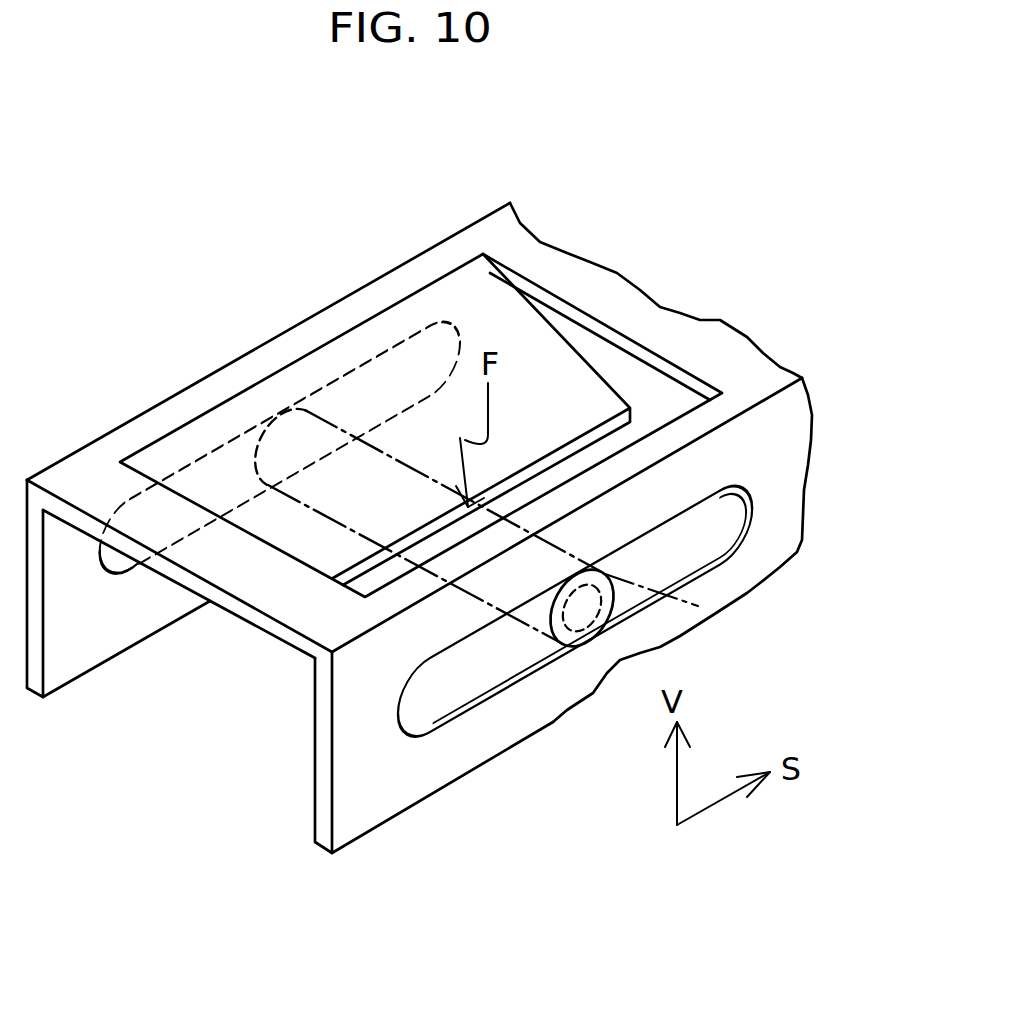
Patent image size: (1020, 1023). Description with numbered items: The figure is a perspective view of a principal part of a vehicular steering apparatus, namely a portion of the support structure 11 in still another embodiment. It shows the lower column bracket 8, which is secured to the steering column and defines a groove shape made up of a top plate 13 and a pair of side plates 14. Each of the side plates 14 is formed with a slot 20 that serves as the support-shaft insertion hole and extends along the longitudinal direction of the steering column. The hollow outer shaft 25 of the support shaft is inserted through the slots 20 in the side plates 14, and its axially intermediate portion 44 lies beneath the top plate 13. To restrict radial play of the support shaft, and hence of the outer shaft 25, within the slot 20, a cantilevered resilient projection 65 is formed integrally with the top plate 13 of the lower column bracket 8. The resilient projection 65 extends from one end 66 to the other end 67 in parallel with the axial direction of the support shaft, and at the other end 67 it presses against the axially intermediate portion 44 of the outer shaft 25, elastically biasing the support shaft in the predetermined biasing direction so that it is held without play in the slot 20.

The lower column bracket 8 is at (467, 541).
The support structure 11 is at (622, 207).
The top plate 13 is at (697, 345).
The side plates 14 is at (92, 650).
The slot 20 is at (222, 463).
The outer shaft 25 is at (698, 606).
The axially intermediate portion 44 is at (523, 528).
The resilient projection 65 is at (571, 393).
The one end 66 is at (423, 312).
The other end 67 is at (302, 643).